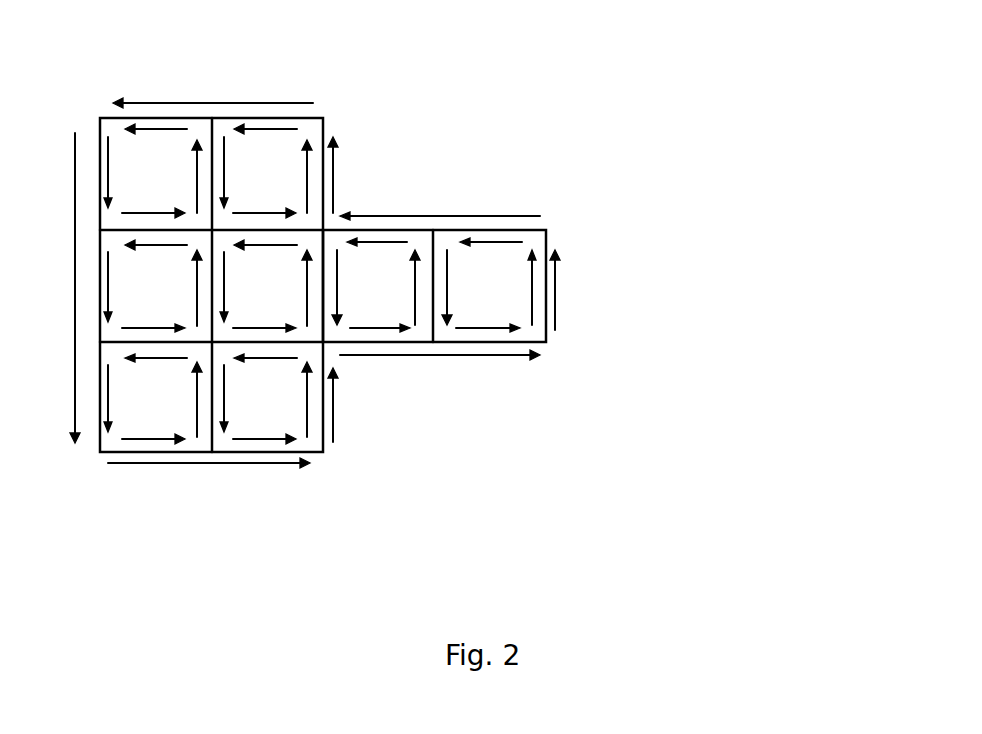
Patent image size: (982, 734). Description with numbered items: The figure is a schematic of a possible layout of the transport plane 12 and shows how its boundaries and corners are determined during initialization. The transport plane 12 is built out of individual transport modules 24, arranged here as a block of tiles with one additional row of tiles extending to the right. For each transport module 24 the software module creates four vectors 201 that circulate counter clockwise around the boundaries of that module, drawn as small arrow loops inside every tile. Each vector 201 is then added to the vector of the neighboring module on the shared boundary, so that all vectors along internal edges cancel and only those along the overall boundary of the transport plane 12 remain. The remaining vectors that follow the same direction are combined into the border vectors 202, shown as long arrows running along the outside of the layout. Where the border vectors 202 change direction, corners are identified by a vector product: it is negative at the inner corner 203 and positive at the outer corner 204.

The transport plane 12 is at (578, 365).
The transport module 24 is at (268, 150).
The vectors 201 is at (312, 293).
The border vectors 202 is at (193, 103).
The inner corner 203 is at (315, 330).
The outer corner 204 is at (110, 442).